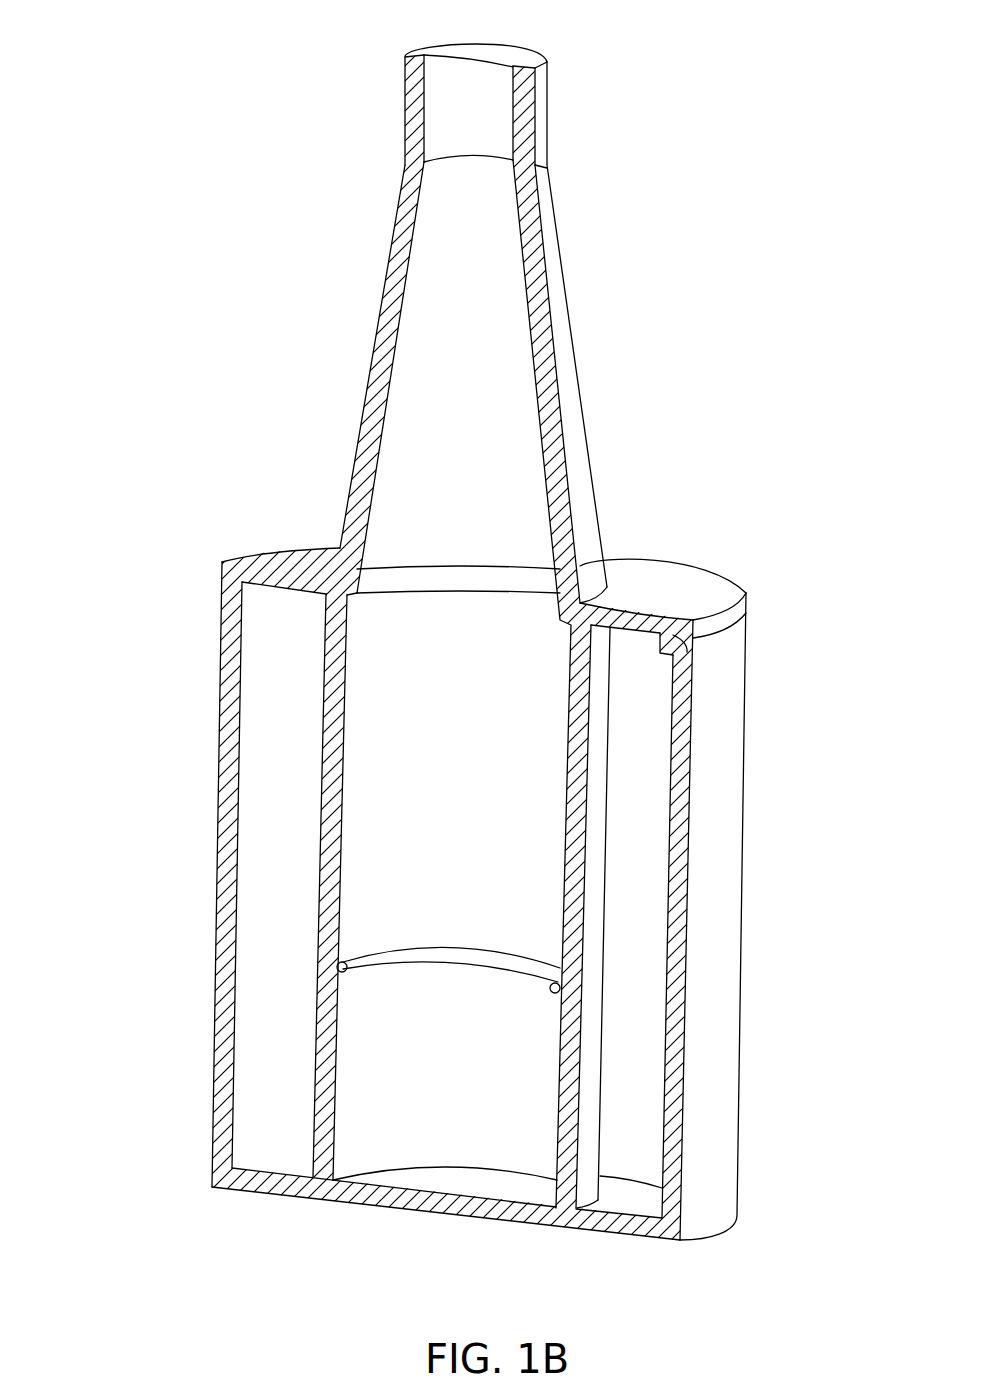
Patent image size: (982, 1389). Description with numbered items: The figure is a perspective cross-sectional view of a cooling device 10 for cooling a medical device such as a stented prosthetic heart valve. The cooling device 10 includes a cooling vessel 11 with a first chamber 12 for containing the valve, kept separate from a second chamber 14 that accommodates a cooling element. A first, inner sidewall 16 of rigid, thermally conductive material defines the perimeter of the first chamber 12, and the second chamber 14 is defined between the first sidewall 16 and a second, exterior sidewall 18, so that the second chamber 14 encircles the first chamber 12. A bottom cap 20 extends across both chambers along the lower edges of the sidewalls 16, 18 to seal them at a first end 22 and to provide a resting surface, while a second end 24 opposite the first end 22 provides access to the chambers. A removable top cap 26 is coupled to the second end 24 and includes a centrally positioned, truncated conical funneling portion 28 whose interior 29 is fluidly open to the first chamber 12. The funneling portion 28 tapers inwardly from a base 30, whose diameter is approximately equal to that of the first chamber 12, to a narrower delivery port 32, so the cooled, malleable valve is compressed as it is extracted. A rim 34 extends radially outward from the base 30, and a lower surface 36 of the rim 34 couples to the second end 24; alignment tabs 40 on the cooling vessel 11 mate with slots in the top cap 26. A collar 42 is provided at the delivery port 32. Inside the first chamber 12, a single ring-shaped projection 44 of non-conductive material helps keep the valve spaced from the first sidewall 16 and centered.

The cooling device 10 is at (145, 113).
The cooling vessel 11 is at (147, 814).
The first chamber 12 is at (545, 790).
The second chamber 14 is at (647, 719).
The first sidewall 16 is at (593, 853).
The second sidewall 18 is at (730, 753).
The bottom cap 20 is at (488, 1213).
The first end 22 is at (345, 1207).
The second end 24 is at (210, 576).
The top cap 26 is at (612, 333).
The funneling portion 28 is at (568, 418).
The interior 29 is at (395, 443).
The base 30 is at (612, 592).
The delivery port 32 is at (475, 97).
The rim 34 is at (725, 597).
The lower surface 36 is at (268, 587).
The alignment tabs 40 is at (690, 653).
The collar 42 is at (543, 120).
The projections 44 is at (373, 961).